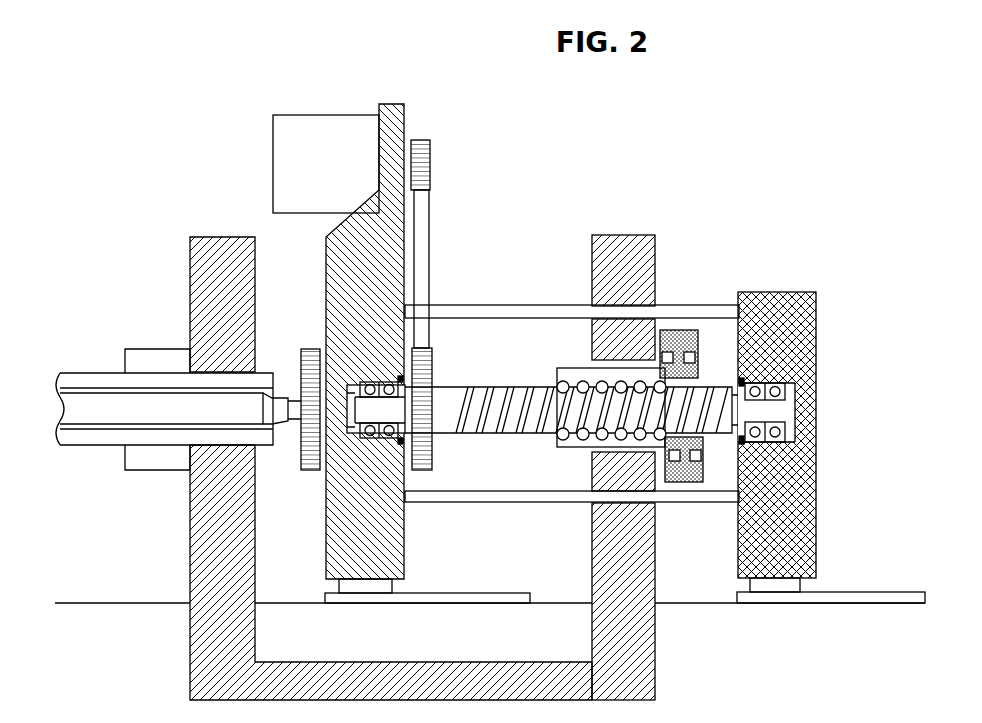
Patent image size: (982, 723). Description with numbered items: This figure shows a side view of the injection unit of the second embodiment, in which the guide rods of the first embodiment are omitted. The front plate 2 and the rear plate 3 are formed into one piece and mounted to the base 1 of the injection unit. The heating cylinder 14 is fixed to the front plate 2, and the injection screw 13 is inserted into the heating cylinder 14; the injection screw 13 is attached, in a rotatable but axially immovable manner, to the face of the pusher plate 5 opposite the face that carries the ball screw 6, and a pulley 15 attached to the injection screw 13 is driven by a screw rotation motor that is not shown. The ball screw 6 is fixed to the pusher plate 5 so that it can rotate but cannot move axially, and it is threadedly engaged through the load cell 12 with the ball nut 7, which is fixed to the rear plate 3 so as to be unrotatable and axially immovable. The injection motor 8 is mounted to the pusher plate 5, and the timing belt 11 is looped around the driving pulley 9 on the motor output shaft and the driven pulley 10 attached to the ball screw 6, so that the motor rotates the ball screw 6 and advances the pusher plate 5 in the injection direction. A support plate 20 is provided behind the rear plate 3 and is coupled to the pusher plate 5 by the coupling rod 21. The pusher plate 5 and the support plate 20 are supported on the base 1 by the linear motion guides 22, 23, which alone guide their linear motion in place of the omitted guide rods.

The base 1 is at (120, 603).
The front plate 2 is at (192, 500).
The rear plate 3 is at (617, 236).
The pusher plate 5 is at (335, 226).
The ball screw 6 is at (515, 387).
The ball nut 7 is at (560, 450).
The injection motor 8 is at (343, 114).
The driving pulley 9 is at (431, 142).
The driven pulley 10 is at (433, 456).
The timing belt 11 is at (430, 258).
The load cell 12 is at (688, 330).
The injection screw 13 is at (163, 398).
The heating cylinder 14 is at (105, 373).
The pulley 15 is at (311, 348).
The support plate 20 is at (790, 292).
The coupling rod 21 is at (684, 305).
The linear motion guide 22 is at (365, 594).
The linear motion guide 23 is at (780, 604).